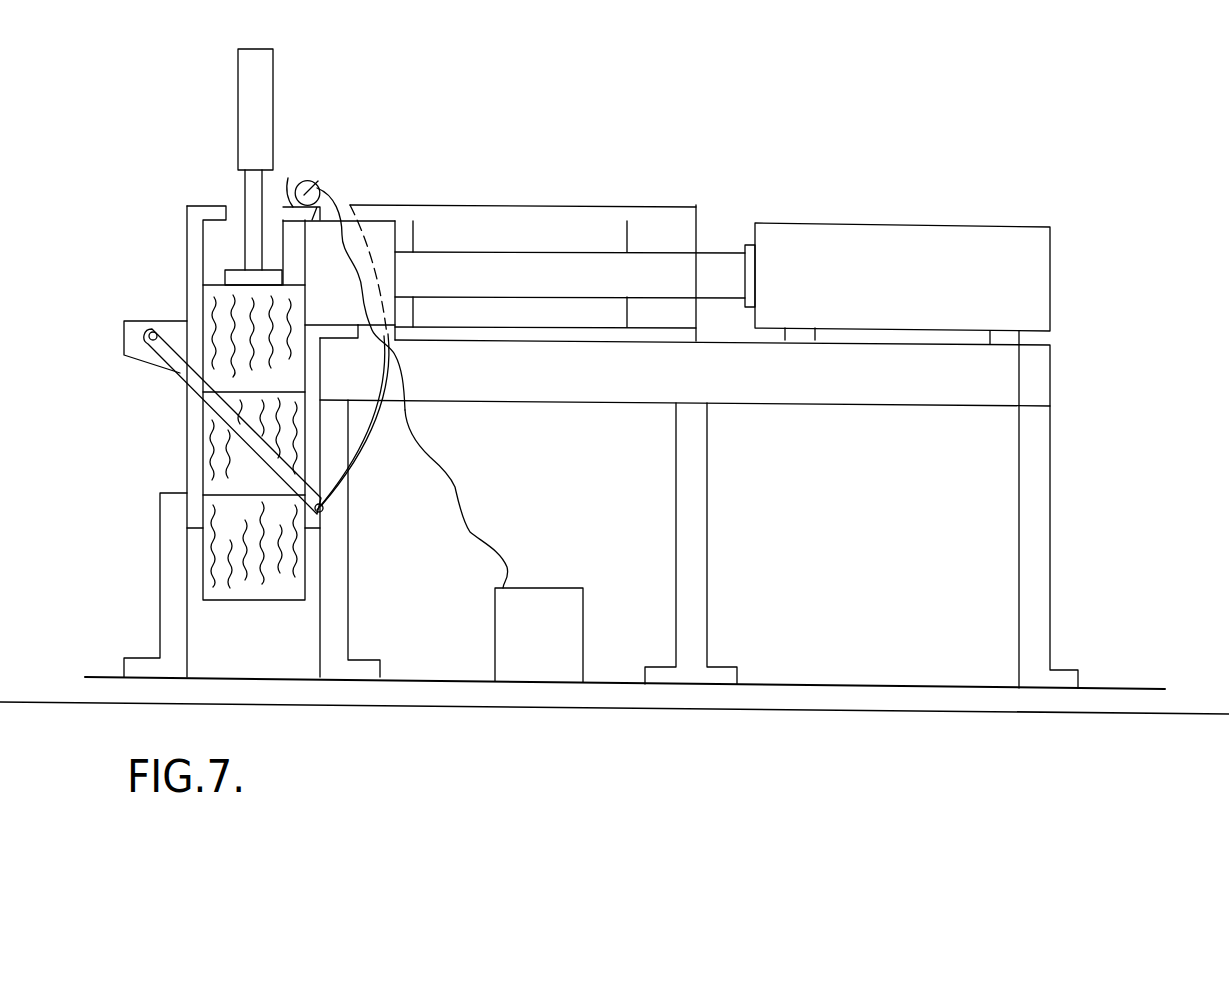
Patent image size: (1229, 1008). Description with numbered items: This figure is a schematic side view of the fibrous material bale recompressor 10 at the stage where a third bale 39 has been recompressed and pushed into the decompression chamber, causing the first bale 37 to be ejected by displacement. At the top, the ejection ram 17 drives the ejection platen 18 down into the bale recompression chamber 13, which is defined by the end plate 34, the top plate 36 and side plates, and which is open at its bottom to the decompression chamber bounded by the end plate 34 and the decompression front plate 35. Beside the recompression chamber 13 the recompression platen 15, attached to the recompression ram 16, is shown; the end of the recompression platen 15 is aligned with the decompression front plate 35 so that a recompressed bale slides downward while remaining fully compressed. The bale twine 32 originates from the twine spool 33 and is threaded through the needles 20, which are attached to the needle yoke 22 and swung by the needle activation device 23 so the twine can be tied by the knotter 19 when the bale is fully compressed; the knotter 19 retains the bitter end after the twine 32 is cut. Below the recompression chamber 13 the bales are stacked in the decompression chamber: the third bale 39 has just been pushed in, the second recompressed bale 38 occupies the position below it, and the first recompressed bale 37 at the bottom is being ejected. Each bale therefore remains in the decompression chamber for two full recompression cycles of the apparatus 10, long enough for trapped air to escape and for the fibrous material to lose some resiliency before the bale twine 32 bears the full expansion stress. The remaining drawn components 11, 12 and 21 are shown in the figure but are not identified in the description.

The fibrous material bale recompressor 10 is at (863, 555).
The horizontal beam 11 is at (629, 387).
The support columns 12 is at (332, 588).
The bale recompression chamber 13 is at (293, 258).
The recompression platen 15 is at (342, 301).
The recompression ram 16 is at (909, 292).
The ejection ram 17 is at (265, 118).
The ejection platen 18 is at (238, 277).
The knotter 19 is at (361, 281).
The needles 20 is at (348, 473).
The lever arm 21 is at (187, 370).
The needle yoke 22 is at (326, 509).
The needle activation device 23 is at (149, 337).
The bale twine 32 is at (455, 487).
The twine spool 33 is at (554, 646).
The end plate 34 is at (195, 255).
The decompression front plate 35 is at (308, 374).
The top plate 36 is at (300, 180).
The first recompressed bale 37 is at (223, 520).
The second recompressed bale 38 is at (223, 447).
The third bale 39 is at (223, 318).